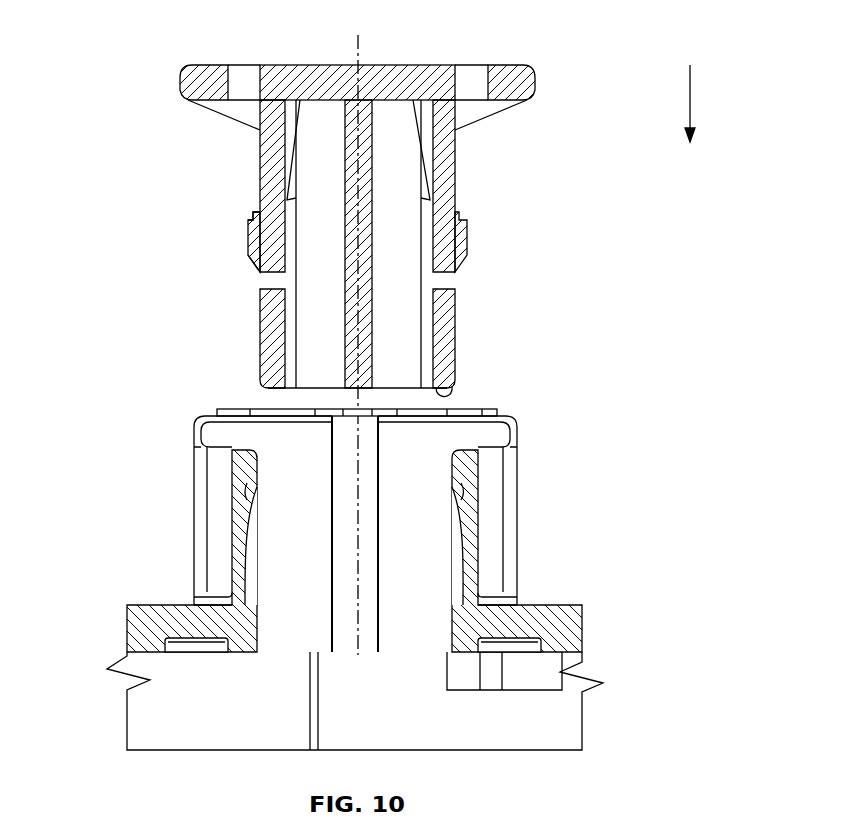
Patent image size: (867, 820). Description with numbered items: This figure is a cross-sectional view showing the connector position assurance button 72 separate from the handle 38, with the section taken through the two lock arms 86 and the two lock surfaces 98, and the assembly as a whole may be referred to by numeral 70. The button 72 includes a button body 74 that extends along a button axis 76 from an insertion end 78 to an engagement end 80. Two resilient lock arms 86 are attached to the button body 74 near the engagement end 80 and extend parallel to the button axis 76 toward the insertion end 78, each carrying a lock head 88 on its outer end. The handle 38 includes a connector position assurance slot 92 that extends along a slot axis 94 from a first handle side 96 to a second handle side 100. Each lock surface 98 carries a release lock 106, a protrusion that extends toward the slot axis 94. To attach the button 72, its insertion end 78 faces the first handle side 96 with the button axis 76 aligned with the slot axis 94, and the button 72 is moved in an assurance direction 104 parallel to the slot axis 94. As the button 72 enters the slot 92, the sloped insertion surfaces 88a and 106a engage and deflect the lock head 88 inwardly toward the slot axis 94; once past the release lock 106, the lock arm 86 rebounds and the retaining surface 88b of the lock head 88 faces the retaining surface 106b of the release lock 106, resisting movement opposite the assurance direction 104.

The fastener assembly 70 is at (116, 42).
The connector position assurance button 72 is at (360, 206).
The button body 74 is at (460, 345).
The button axis 76 is at (346, 80).
The insertion end 78 is at (455, 393).
The engagement end 80 is at (398, 88).
The lock arm 86 is at (268, 172).
The lock head 88 is at (255, 245).
The insertion surface 88a is at (252, 265).
The retaining surface 88b is at (258, 215).
The connector position assurance slot 92 is at (352, 487).
The slot axis 94 is at (370, 478).
The first handle side 96 is at (560, 605).
The lock surface 98 is at (248, 522).
The second handle side 100 is at (236, 653).
The assurance direction 104 is at (693, 102).
The release lock 106 is at (243, 484).
The insertion surface 106a is at (243, 478).
The retaining surface 106b is at (245, 523).
The handle 38 is at (143, 612).